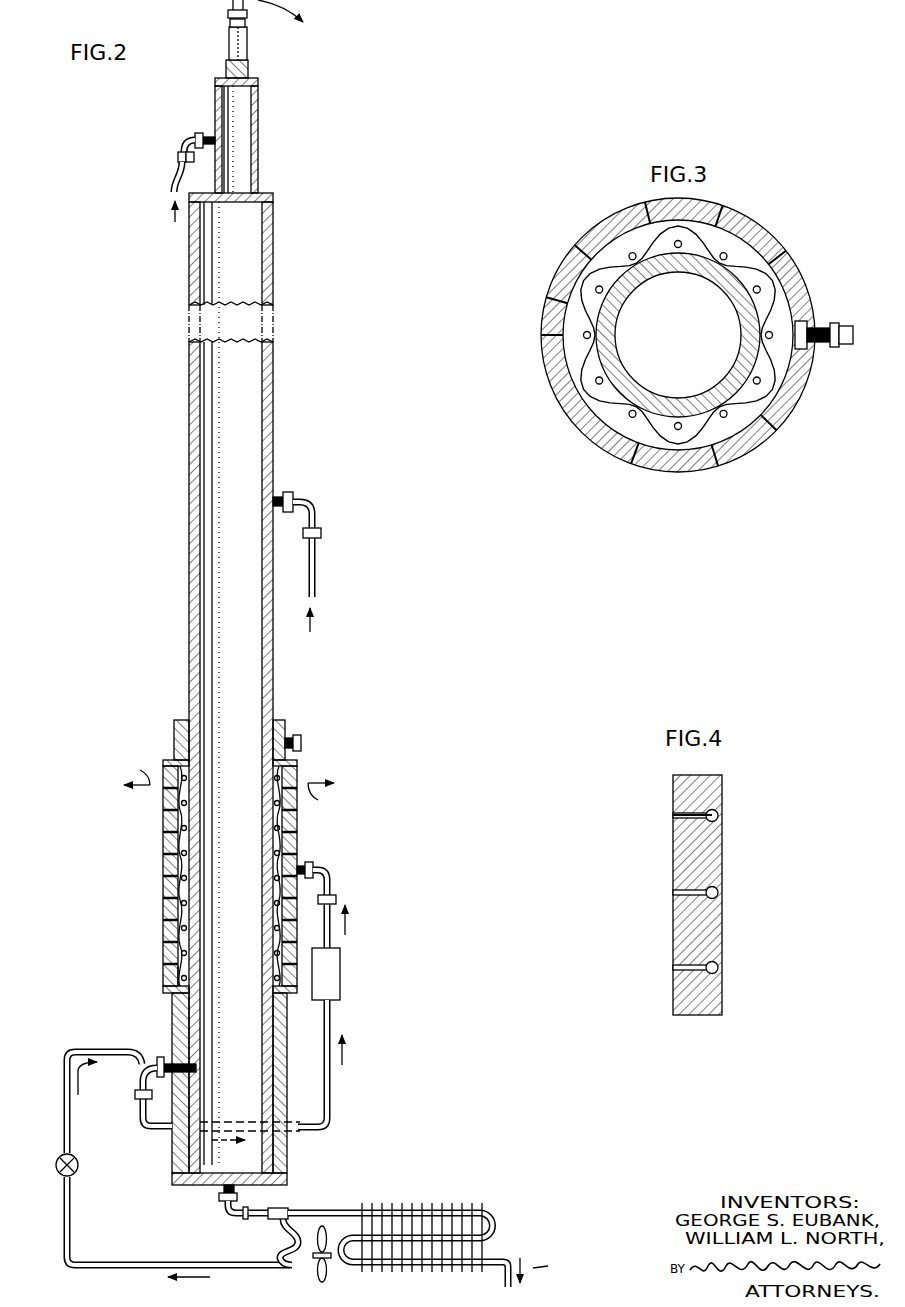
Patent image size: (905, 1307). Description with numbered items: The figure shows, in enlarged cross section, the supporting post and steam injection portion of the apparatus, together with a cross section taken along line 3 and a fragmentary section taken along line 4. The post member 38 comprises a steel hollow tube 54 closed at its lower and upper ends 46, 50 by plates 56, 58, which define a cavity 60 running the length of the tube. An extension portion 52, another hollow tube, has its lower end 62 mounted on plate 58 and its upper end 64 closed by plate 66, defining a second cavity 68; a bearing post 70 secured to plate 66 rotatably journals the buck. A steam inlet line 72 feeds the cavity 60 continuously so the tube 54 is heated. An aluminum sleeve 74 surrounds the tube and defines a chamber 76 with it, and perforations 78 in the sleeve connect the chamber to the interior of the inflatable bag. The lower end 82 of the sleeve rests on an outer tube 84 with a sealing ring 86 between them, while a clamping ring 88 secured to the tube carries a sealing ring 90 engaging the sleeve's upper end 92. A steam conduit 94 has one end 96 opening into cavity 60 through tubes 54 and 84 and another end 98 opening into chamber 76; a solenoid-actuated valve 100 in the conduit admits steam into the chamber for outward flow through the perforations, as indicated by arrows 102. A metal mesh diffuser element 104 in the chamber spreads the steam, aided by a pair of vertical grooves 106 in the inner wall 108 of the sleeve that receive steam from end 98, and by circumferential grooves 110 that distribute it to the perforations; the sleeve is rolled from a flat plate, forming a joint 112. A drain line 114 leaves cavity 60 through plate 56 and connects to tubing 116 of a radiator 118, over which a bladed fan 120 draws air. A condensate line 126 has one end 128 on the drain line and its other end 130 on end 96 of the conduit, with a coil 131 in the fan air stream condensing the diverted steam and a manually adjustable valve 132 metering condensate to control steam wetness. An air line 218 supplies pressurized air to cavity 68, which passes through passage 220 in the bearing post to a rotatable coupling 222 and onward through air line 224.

In FIG. 2, the post member 38 is at (172, 470).
In FIG. 2, the lower end 46 is at (287, 1160).
In FIG. 2, the upper end 50 is at (274, 218).
In FIG. 2, the extension portion 52 is at (238, 139).
In FIG. 2, the hollow tube 54 is at (226, 687).
In FIG. 2, the plate 56 is at (272, 1185).
In FIG. 2, the plate 58 is at (265, 193).
In FIG. 2, the cavity 60 is at (247, 365).
In FIG. 2, the lower end 62 is at (258, 165).
In FIG. 2, the upper end 64 is at (215, 94).
In FIG. 2, the plate 66 is at (227, 78).
In FIG. 2, the cavity 68 is at (245, 141).
In FIG. 2, the bearing post 70 is at (248, 45).
In FIG. 2, the steam inlet line 72 is at (314, 563).
In FIG. 2, the sleeve 74 is at (298, 825).
In FIG. 3, the sleeve 74 is at (618, 447).
In FIG. 4, the sleeve 74 is at (722, 895).
In FIG. 2, the chamber 76 is at (170, 912).
In FIG. 3, the chamber 76 is at (708, 435).
In FIG. 2, the perforations 78 is at (165, 880).
In FIG. 3, the perforations 78 is at (582, 420).
In FIG. 4, the perforations 78 is at (672, 816).
In FIG. 2, the lower end 82 is at (168, 978).
In FIG. 2, the outer tube 84 is at (175, 1022).
In FIG. 2, the sealing ring 86 is at (170, 990).
In FIG. 2, the clamping ring 88 is at (280, 722).
In FIG. 2, the sealing ring 90 is at (300, 750).
In FIG. 2, the upper end 92 is at (297, 768).
In FIG. 2, the steam conduit 94 is at (331, 1085).
In FIG. 2, the end 96 is at (165, 1091).
In FIG. 2, the end 98 is at (306, 866).
In FIG. 3, the end 98 is at (846, 326).
In FIG. 2, the solenoid-actuated valve 100 is at (341, 970).
In FIG. 2, the arrows 102 is at (234, 783).
In FIG. 2, the diffuser element 104 is at (190, 808).
In FIG. 3, the diffuser element 104 is at (666, 440).
In FIG. 3, the vertically extending grooves 106 is at (806, 322).
In FIG. 3, the inner wall 108 is at (680, 335).
In FIG. 4, the inner wall 108 is at (723, 853).
In FIG. 4, the circumferentially extending grooves 110 is at (718, 815).
In FIG. 3, the joint 112 is at (546, 335).
In FIG. 2, the drain line 114 is at (232, 1219).
In FIG. 2, the tubing 116 is at (495, 1228).
In FIG. 2, the radiator 118 is at (470, 1229).
In FIG. 2, the bladed fan 120 is at (332, 1258).
In FIG. 2, the condensate line 126 is at (63, 1215).
In FIG. 2, the end 128 is at (276, 1221).
In FIG. 2, the end 130 is at (138, 1052).
In FIG. 2, the coil 131 is at (296, 1268).
In FIG. 2, the manually adjustable valve 132 is at (56, 1165).
In FIG. 2, the air line 218 is at (190, 148).
In FIG. 2, the passage 220 is at (249, 72).
In FIG. 2, the rotatable coupling 222 is at (227, 15).
In FIG. 2, the air line 224 is at (280, 16).
In FIG. 2, the section line 3 is at (132, 873).
In FIG. 3, the section line 4 is at (528, 304).